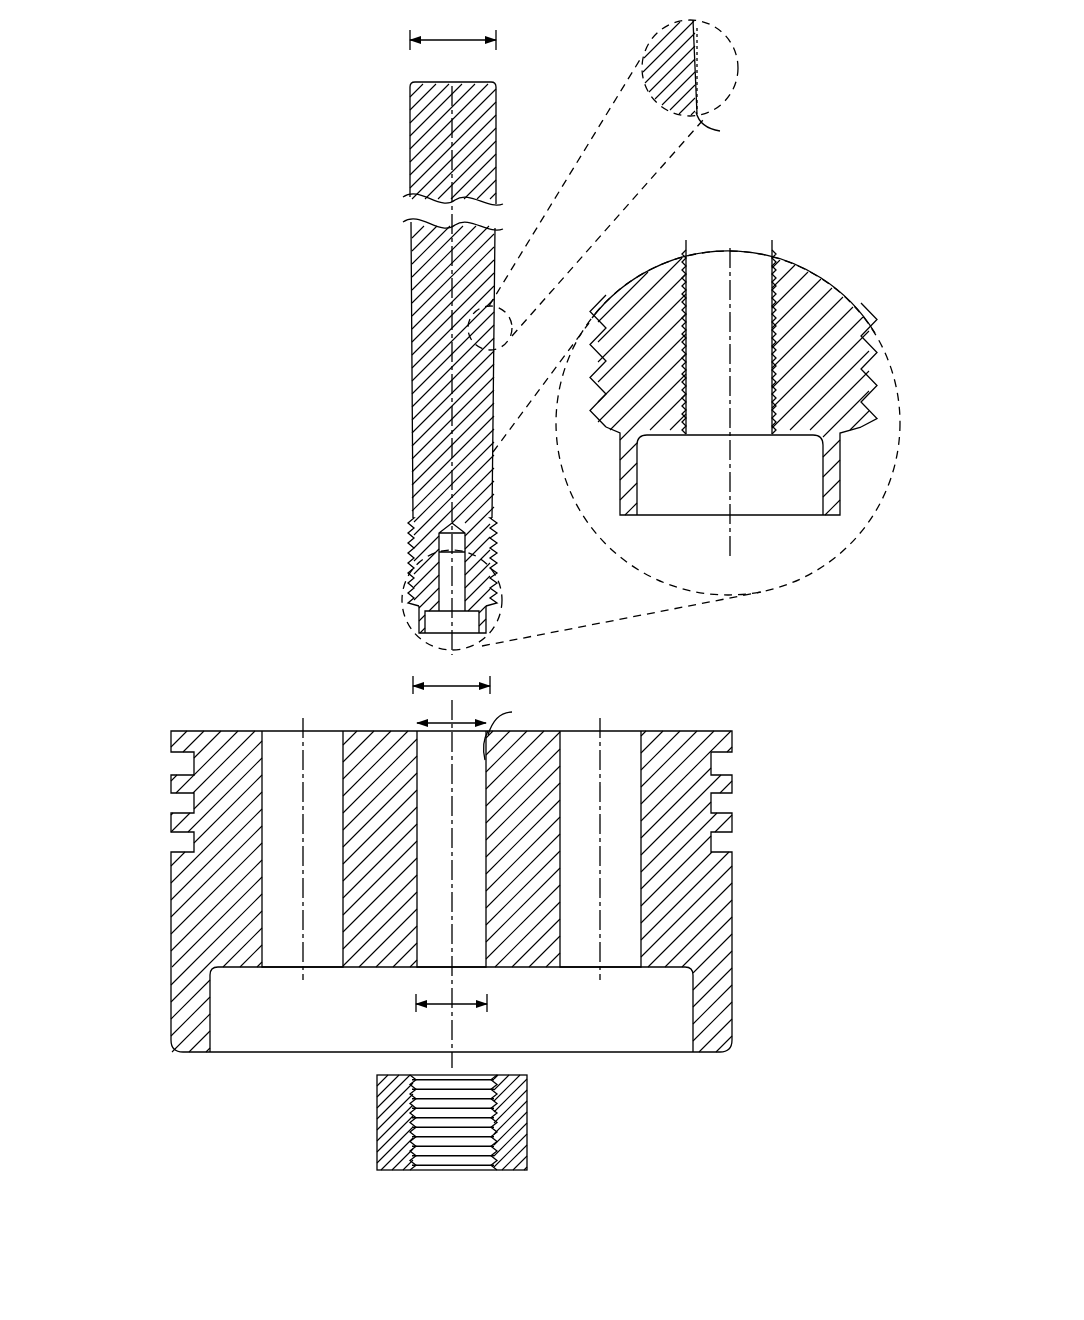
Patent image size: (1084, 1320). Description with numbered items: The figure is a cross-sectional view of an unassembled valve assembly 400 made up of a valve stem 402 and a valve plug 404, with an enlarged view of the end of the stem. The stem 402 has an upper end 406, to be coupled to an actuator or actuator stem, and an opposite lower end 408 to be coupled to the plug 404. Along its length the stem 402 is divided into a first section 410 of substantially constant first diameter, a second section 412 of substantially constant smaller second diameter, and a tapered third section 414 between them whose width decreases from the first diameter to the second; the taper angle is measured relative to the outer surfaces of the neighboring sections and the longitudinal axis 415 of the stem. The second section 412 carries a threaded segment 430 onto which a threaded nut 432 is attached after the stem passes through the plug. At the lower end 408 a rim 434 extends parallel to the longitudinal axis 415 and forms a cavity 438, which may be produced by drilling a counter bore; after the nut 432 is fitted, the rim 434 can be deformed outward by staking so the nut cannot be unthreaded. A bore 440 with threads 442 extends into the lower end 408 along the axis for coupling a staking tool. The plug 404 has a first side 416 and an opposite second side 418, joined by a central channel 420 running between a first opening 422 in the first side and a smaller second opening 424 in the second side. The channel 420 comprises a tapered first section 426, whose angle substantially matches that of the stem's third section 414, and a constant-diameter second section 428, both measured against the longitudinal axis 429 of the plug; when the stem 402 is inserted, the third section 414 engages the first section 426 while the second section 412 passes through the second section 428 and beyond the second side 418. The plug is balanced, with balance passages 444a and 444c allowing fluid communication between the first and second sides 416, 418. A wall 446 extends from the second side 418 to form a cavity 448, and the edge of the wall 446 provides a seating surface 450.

The valve assembly 400 is at (180, 30).
The valve stem 402 is at (402, 342).
The valve plug 404 is at (417, 890).
The upper end 406 is at (438, 82).
The lower end 408 is at (660, 437).
The first section 410 is at (318, 82).
The second section 412 is at (318, 448).
The third section 414 is at (318, 335).
The longitudinal axis 415 is at (455, 152).
The first side 416 is at (225, 731).
The second side 418 is at (352, 967).
The central channel 420 is at (490, 728).
The first opening 422 is at (475, 859).
The second opening 424 is at (417, 967).
The first section of channel 426 is at (470, 794).
The second section of channel 428 is at (478, 918).
The longitudinal axis 429 is at (452, 1030).
The threaded segment 430 is at (412, 540).
The threaded nut 432 is at (515, 1133).
The rim 434 is at (709, 379).
The cavity 438 is at (738, 474).
The bore 440 is at (770, 270).
The threads 442 is at (772, 312).
The balance passage 444a is at (330, 745).
The balance passage 444c is at (625, 745).
The wall 446 is at (708, 1040).
The cavity 448 is at (451, 1009).
The seating surface 450 is at (178, 1050).